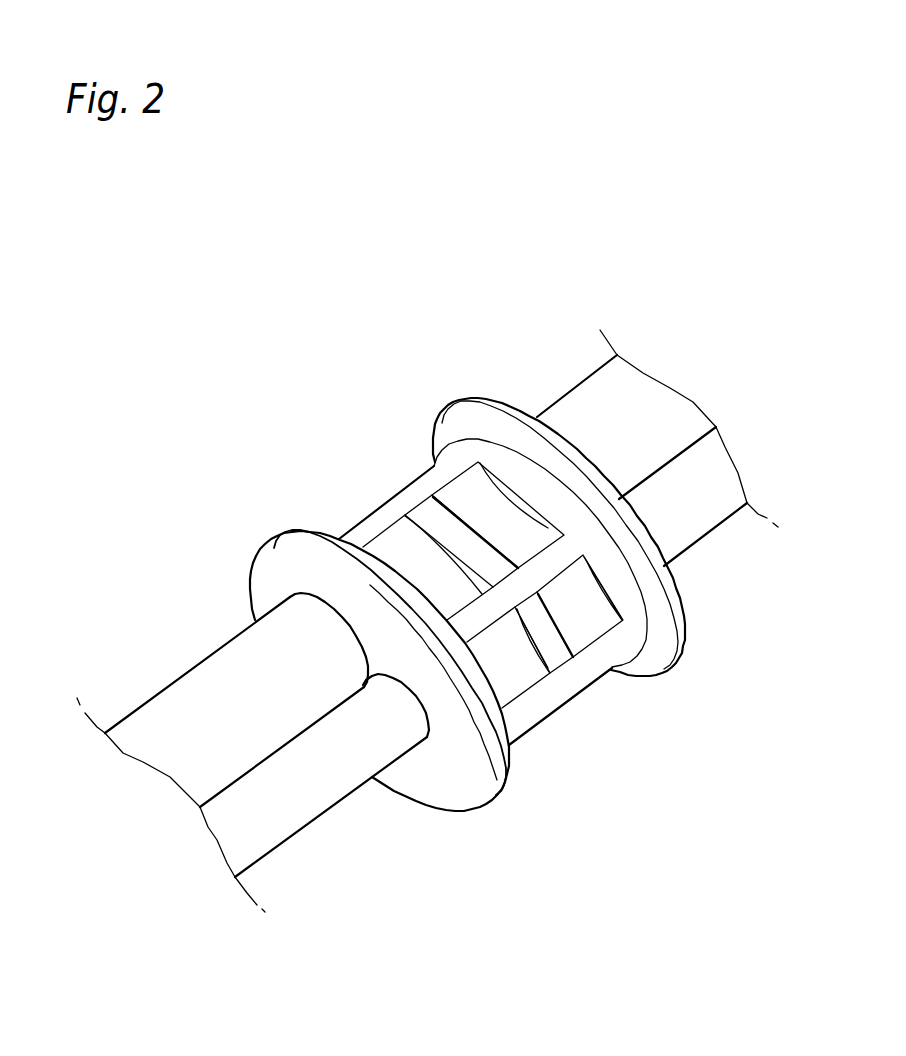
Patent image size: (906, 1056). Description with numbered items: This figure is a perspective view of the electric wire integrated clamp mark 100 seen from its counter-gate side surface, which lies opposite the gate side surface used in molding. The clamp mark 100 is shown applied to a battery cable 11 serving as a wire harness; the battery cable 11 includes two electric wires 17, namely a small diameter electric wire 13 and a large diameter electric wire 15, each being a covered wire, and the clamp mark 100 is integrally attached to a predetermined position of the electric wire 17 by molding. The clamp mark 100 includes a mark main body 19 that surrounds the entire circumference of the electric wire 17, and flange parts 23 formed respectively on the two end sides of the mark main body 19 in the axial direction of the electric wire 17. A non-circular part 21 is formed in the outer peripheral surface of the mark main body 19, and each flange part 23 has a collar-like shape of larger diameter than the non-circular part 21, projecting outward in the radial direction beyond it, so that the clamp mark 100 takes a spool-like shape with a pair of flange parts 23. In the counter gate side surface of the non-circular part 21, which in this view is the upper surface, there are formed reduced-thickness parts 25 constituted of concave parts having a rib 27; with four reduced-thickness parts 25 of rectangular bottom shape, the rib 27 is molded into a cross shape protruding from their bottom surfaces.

The battery cable 11 is at (710, 204).
The small diameter electric wire 13 is at (693, 455).
The large diameter electric wire 15 is at (643, 390).
The electric wire 17 is at (728, 248).
The mark main body 19 is at (357, 503).
The non-circular part 21 is at (623, 577).
The flange part 23 is at (683, 637).
The reduced-thickness part 25 is at (418, 555).
The rib 27 is at (541, 565).
The electric wire integrated clamp mark 100 is at (476, 360).